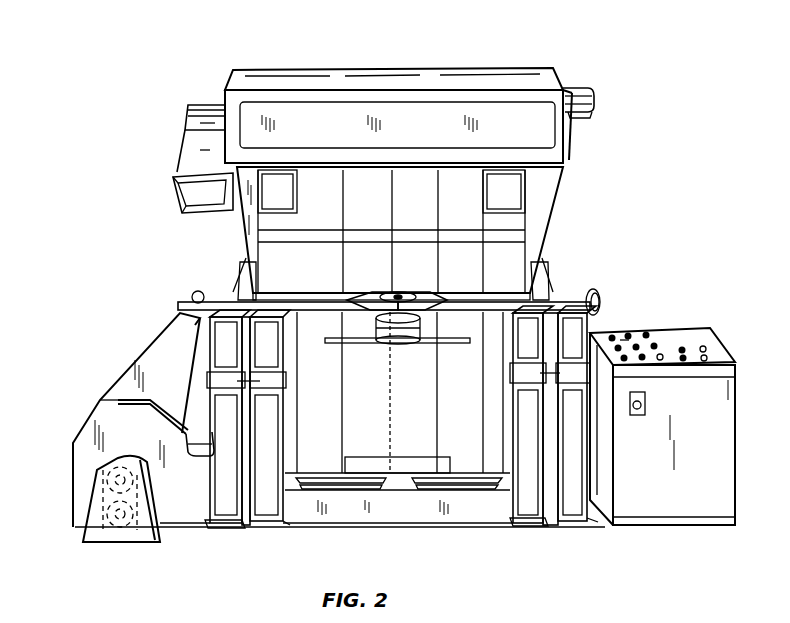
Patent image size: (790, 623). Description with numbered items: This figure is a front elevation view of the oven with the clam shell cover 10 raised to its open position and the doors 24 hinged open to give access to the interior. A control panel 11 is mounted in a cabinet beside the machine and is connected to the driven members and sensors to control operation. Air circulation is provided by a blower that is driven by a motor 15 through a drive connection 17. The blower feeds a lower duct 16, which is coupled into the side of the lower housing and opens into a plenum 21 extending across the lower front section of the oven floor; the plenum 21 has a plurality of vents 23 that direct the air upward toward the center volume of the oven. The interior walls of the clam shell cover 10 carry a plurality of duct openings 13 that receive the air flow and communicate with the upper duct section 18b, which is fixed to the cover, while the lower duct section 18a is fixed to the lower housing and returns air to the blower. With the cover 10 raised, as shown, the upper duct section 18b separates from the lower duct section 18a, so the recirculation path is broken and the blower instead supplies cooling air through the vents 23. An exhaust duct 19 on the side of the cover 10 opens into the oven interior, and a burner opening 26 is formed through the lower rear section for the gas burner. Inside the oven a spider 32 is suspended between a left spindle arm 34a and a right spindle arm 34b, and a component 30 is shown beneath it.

The clam shell cover 10 is at (412, 62).
The control panel 11 is at (722, 336).
The duct openings 13 is at (285, 190).
The motor 15 is at (125, 542).
The lower duct 16 is at (204, 440).
The drive connection 17 is at (92, 495).
The lower duct section 18a is at (173, 332).
The upper duct section 18b is at (213, 128).
The exhaust duct 19 is at (579, 88).
The plenum 21 is at (425, 507).
The vents 23 is at (330, 477).
The doors 24 is at (227, 523).
The burner opening 26 is at (405, 463).
The bowl 30 is at (400, 346).
The spider 32 is at (414, 288).
The left spindle arm 34a is at (315, 300).
The right spindle arm 34b is at (495, 300).